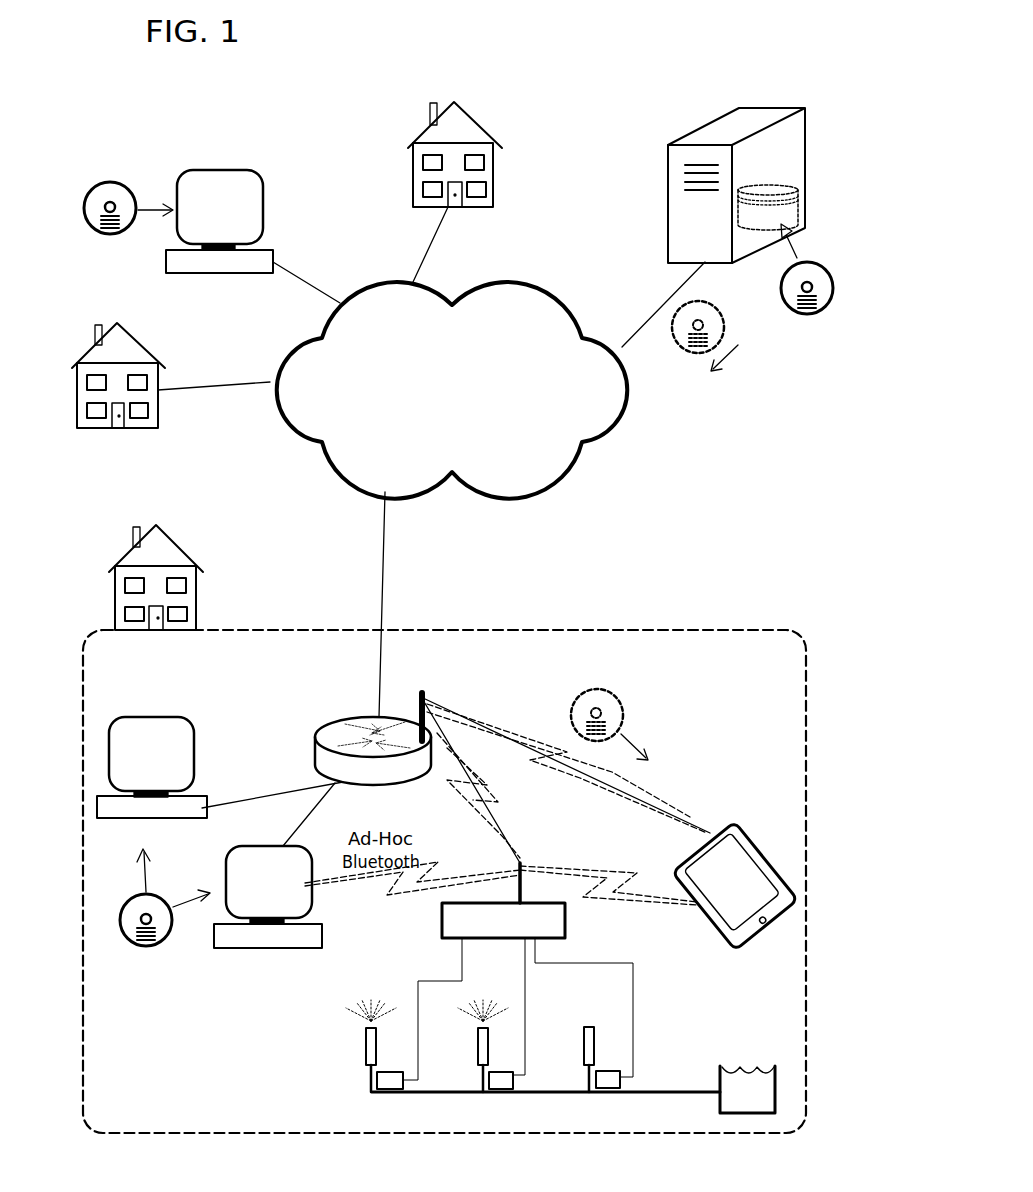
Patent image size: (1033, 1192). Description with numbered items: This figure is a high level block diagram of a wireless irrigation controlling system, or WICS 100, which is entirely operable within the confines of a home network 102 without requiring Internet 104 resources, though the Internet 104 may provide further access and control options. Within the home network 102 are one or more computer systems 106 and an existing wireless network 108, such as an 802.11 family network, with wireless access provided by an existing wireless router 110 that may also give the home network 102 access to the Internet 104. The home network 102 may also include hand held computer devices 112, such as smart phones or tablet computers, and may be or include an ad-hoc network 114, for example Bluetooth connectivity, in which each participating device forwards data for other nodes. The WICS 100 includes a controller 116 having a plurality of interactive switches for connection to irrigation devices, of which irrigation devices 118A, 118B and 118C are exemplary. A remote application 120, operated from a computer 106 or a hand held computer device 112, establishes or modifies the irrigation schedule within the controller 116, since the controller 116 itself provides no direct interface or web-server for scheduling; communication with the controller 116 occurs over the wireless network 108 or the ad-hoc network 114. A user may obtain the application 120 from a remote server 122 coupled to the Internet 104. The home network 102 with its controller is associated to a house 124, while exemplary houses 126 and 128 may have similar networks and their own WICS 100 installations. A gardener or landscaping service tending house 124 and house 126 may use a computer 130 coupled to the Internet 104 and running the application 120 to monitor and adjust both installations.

The wireless irrigation controlling system 100 is at (595, 132).
The home network 102 is at (752, 631).
The Internet 104 is at (522, 463).
The computer system 106 is at (171, 768).
The wireless network 108 is at (512, 732).
The wireless router 110 is at (395, 778).
The hand held computer device 112 is at (763, 893).
The ad-hoc network 114 is at (593, 870).
The controller 116 is at (439, 929).
The irrigation device 118A is at (366, 1072).
The irrigation device 118B is at (476, 1077).
The irrigation device 118C is at (583, 1077).
The remote application 120 is at (115, 232).
The remote server 122 is at (800, 160).
The house 124 is at (196, 618).
The house 126 is at (495, 180).
The house 128 is at (158, 383).
The computer 130 is at (244, 224).